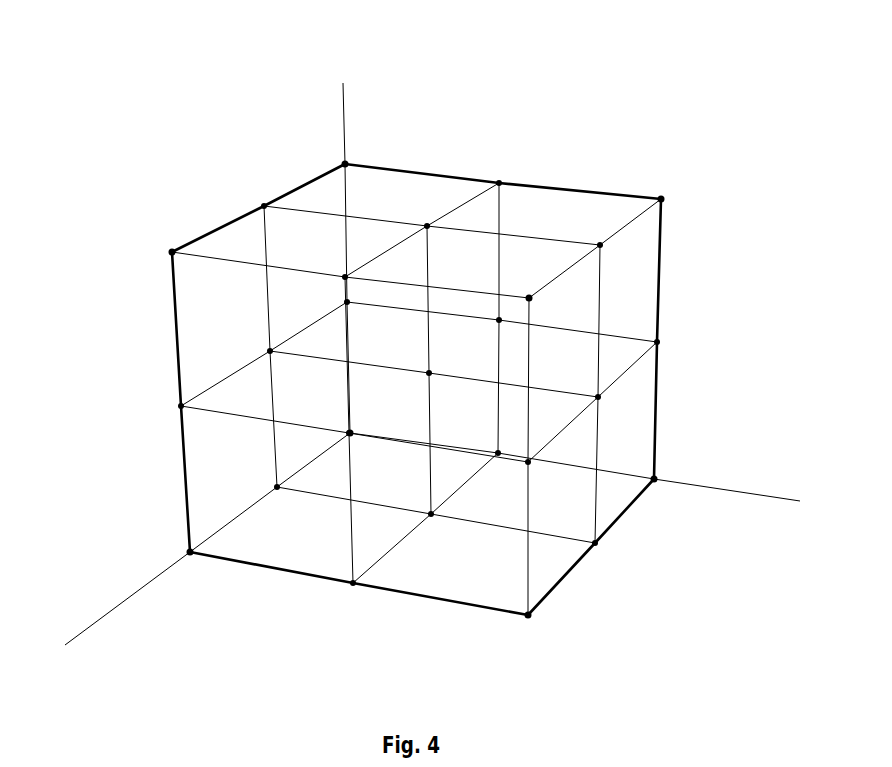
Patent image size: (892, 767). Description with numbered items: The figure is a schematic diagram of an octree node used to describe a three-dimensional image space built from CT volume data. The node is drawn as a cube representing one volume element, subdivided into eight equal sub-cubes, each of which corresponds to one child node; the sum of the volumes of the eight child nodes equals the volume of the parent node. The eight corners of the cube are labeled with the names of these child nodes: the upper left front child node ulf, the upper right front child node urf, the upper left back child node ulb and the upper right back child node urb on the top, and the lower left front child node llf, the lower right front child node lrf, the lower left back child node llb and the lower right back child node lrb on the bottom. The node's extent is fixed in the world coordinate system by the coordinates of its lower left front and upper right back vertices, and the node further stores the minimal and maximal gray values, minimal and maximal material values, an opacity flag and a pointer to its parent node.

The upper left back child node ulb is at (383, 143).
The upper right back child node urb is at (700, 184).
The upper left front child node ulf is at (129, 245).
The upper right front child node urf is at (572, 217).
The lower left back child node llb is at (229, 426).
The lower right back child node lrb is at (689, 467).
The lower left front child node llf is at (147, 558).
The lower right front child node lrf is at (567, 622).